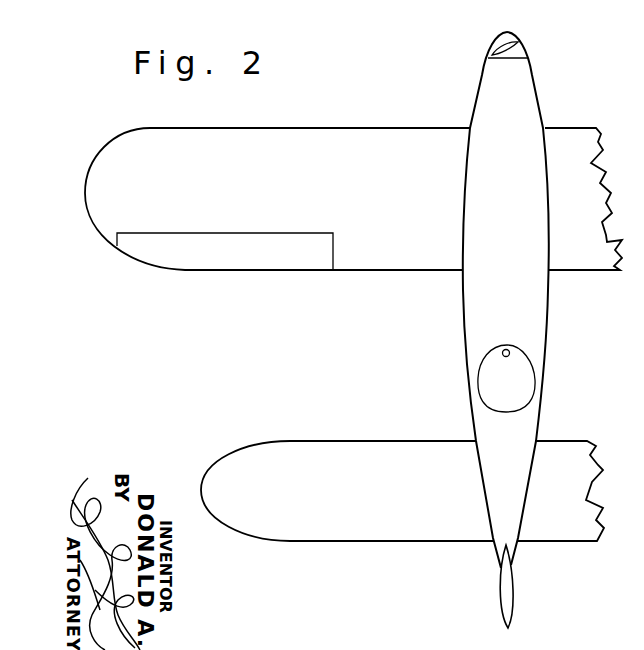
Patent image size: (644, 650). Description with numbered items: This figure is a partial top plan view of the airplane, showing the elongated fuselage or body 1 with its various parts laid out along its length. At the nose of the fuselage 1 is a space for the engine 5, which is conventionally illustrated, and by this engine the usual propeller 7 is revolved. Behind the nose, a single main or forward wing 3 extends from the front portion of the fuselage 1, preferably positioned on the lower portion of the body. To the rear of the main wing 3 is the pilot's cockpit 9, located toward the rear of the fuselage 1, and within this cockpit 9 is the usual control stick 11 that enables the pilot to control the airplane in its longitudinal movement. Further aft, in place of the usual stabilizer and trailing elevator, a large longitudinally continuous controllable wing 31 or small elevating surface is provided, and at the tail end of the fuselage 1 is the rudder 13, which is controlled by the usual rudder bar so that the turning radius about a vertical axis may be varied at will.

The fuselage or body 1 is at (549, 323).
The main or forward wing 3 is at (243, 140).
The engine 5 is at (522, 78).
The propeller 7 is at (520, 45).
The cockpit 9 is at (480, 378).
The control stick 11 is at (502, 352).
The rudder 13 is at (500, 584).
The controllable wing 31 is at (348, 450).